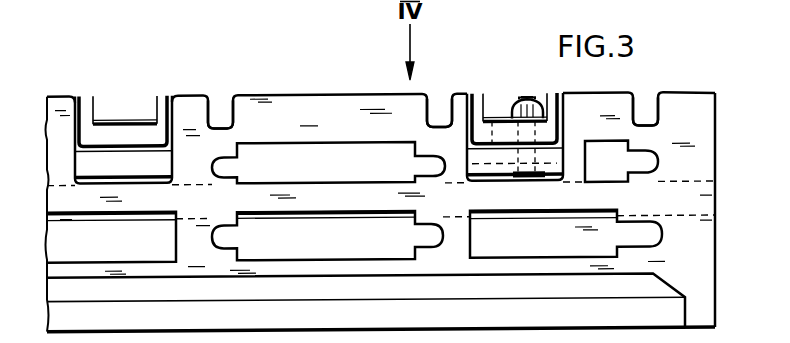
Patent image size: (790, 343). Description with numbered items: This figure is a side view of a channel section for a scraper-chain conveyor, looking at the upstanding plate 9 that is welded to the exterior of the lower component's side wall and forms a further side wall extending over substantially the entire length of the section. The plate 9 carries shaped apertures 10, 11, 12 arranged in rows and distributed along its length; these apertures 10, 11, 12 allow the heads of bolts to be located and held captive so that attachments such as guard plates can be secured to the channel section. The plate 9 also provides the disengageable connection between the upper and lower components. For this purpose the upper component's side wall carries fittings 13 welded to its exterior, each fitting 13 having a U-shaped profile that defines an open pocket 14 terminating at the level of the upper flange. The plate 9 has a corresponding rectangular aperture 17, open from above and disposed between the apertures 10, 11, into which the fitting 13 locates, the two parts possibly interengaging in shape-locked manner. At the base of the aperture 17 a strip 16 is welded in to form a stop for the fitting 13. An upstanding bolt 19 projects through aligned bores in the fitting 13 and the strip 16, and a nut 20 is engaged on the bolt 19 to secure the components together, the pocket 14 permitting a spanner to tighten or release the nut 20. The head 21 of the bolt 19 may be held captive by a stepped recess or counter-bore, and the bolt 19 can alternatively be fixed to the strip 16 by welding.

The upstanding plate 9 is at (316, 96).
The shaped aperture 10 is at (221, 108).
The shaped aperture 11 is at (314, 176).
The shaped aperture 12 is at (84, 252).
The fitting 13 is at (90, 135).
The open pocket 14 is at (112, 102).
The strip 16 is at (90, 168).
The rectangular aperture 17 is at (173, 107).
The bolt 19 is at (533, 104).
The nut 20 is at (527, 100).
The bolt head 21 is at (535, 182).